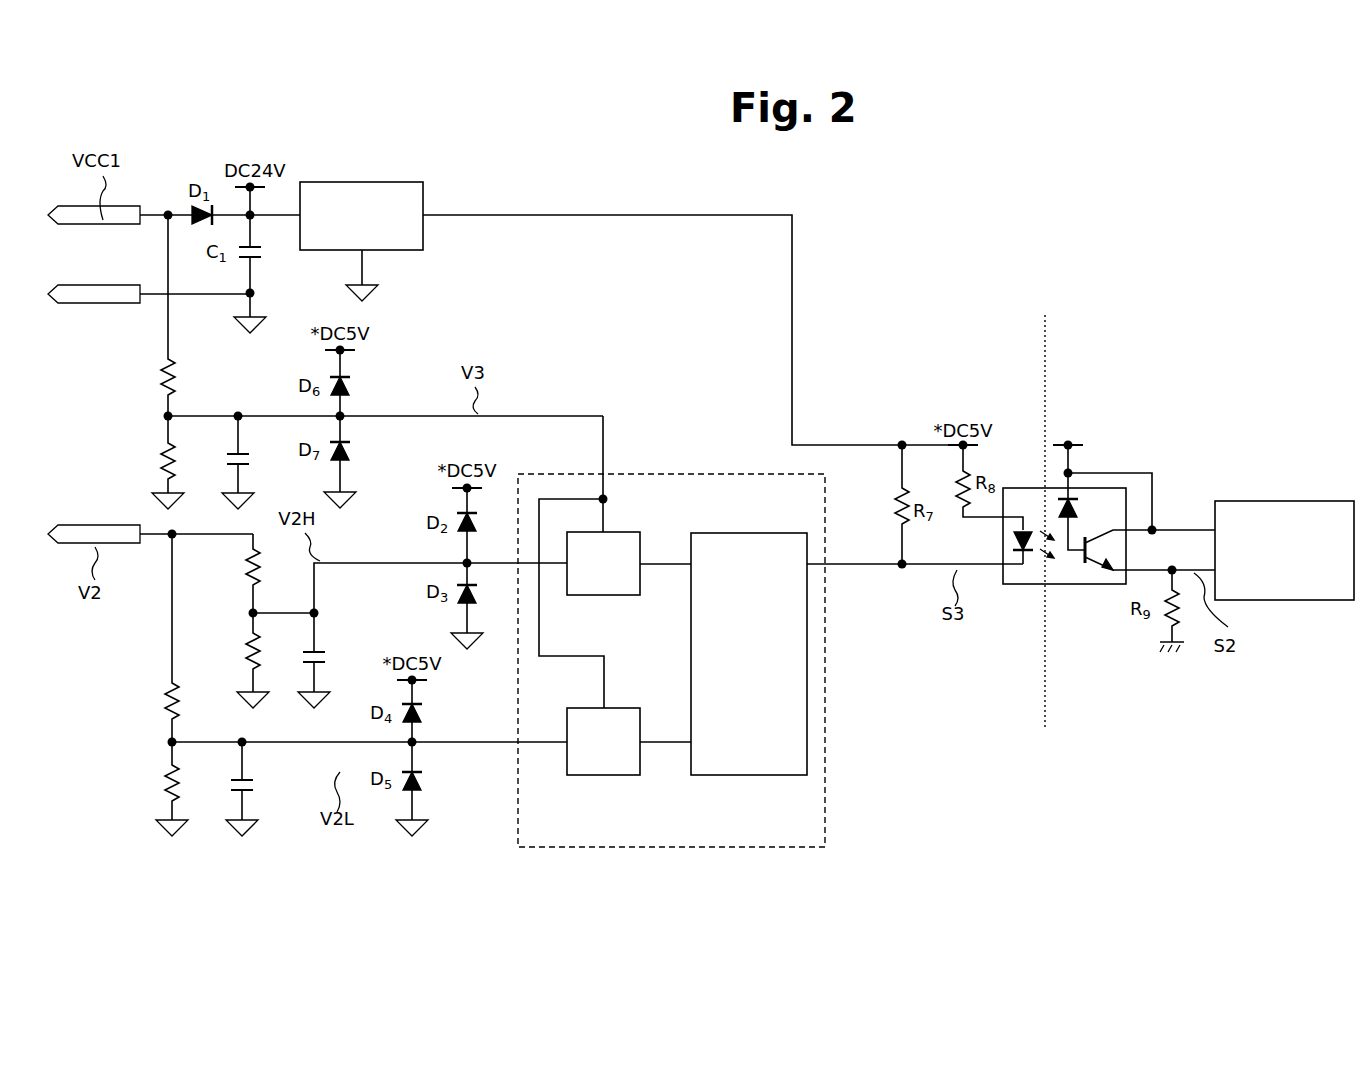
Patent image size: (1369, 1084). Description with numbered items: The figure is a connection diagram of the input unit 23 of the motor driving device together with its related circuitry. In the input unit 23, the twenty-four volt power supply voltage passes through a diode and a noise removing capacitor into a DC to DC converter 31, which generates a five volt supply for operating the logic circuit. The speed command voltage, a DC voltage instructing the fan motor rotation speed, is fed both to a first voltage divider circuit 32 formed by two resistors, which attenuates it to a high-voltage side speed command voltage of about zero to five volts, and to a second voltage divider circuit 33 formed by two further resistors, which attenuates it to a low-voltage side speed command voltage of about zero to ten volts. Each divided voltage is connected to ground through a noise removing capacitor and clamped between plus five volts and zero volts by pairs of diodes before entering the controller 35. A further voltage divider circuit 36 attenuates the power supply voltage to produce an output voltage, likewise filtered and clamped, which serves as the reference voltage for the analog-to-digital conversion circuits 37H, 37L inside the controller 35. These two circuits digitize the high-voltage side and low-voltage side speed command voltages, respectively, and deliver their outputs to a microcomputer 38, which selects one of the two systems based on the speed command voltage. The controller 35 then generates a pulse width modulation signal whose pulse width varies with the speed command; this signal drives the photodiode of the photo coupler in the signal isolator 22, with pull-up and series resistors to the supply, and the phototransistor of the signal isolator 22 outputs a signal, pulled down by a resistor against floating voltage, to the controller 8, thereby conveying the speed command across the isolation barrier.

The controller 8 is at (1300, 602).
The signal isolator 22 is at (1022, 586).
The input unit 23 is at (125, 842).
The DC to DC converter 31 is at (388, 182).
The first voltage divider circuit 32 is at (282, 684).
The second voltage divider circuit 33 is at (158, 748).
The controller 35 is at (671, 661).
The voltage divider circuit 36 is at (135, 378).
The analog-to-digital conversion circuit 37H is at (628, 597).
The analog-to-digital conversion circuit 37L is at (606, 777).
The microcomputer 38 is at (748, 777).